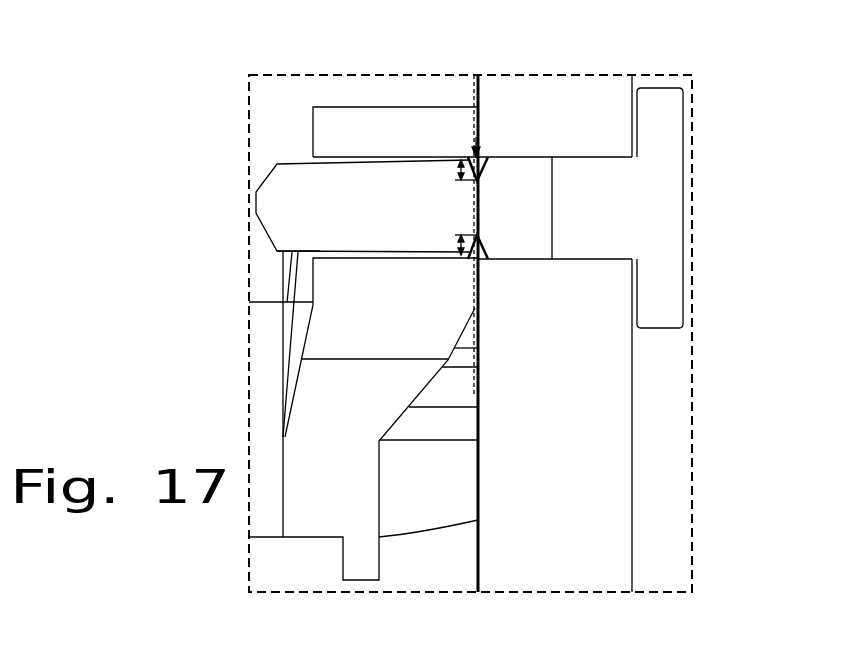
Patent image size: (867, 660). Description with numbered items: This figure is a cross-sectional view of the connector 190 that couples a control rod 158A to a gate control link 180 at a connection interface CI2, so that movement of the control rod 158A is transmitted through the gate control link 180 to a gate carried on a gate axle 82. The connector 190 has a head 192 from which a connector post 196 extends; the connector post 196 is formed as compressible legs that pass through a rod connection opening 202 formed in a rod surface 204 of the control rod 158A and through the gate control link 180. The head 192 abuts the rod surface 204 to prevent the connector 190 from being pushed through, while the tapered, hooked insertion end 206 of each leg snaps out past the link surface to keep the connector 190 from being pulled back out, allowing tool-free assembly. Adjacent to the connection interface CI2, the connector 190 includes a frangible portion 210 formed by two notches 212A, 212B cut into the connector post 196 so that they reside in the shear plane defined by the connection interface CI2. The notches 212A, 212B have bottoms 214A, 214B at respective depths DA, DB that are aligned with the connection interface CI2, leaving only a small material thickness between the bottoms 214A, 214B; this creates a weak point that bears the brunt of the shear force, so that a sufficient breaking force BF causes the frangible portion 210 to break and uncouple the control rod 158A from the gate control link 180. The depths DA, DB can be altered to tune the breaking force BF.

The rod surface 204 is at (632, 133).
The head 192 is at (665, 162).
The rod connection opening 202 is at (478, 157).
The notch 212A is at (480, 177).
The notch 212B is at (481, 257).
The bottom 214A is at (479, 181).
The bottom 214B is at (480, 235).
The connector post 196 is at (518, 240).
The connector 190 is at (605, 267).
The control rod 158A is at (613, 550).
The gate axle 82 is at (450, 397).
The gate control link 180 is at (370, 342).
The hooked insertion end 206 is at (277, 253).
The frangible portion 210 is at (458, 189).
The breaking force BF is at (476, 137).
The depth DA is at (458, 170).
The depth DB is at (458, 249).
The connection interface CI2 is at (475, 258).